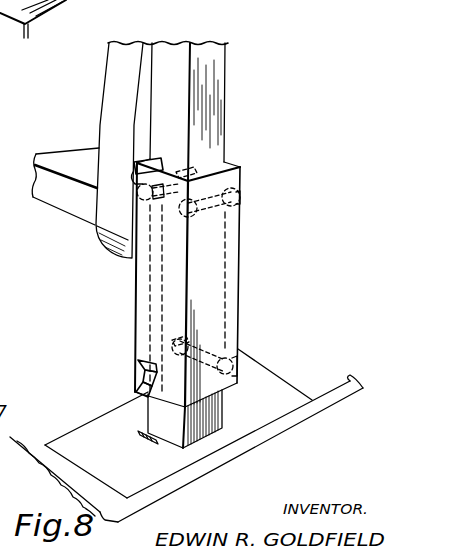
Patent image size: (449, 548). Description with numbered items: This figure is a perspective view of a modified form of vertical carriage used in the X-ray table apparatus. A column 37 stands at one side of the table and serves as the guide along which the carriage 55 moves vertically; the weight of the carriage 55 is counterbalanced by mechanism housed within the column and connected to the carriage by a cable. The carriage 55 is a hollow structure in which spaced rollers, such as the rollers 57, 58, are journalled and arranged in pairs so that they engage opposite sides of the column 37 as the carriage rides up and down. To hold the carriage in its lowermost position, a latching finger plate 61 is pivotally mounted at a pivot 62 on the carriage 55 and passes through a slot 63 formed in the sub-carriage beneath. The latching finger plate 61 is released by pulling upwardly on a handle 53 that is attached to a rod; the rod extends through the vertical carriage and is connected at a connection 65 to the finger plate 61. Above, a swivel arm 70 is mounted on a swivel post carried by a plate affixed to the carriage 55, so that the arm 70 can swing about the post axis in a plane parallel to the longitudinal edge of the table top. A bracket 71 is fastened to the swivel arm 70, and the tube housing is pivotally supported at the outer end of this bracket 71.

The column 37 is at (226, 53).
The swivel arm 70 is at (107, 77).
The bracket 71 is at (67, 149).
The handle 53 is at (131, 187).
The roller 57 is at (197, 165).
The roller 58 is at (242, 208).
The pivot 62 is at (135, 362).
The connection 65 is at (136, 378).
The latching finger plate 61 is at (138, 393).
The slot 63 is at (145, 443).
The carriage 55 is at (181, 435).